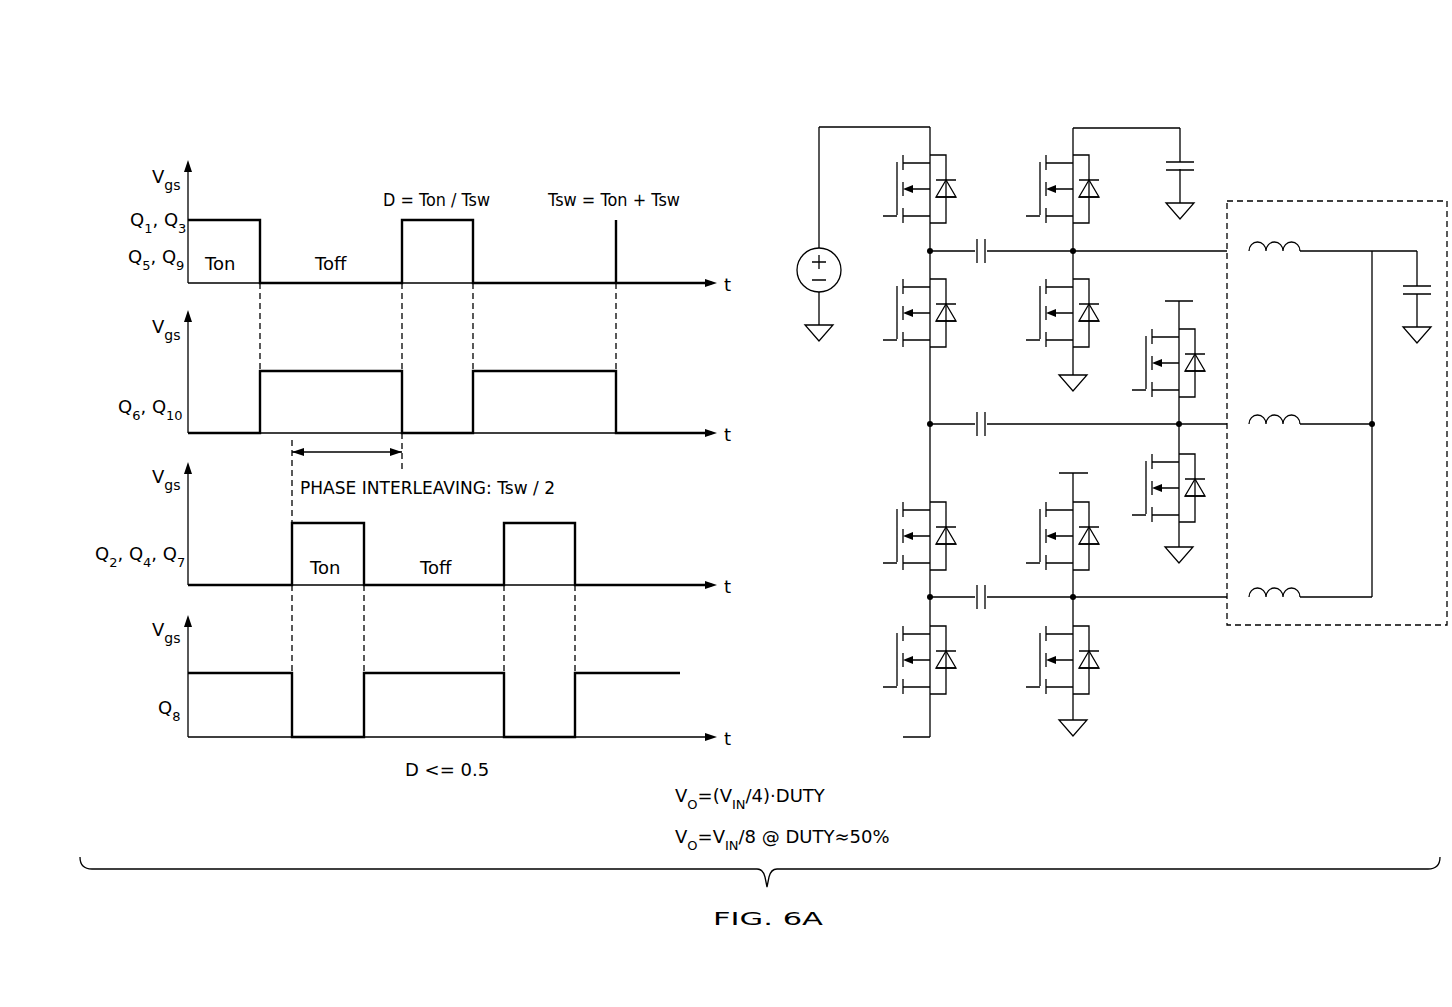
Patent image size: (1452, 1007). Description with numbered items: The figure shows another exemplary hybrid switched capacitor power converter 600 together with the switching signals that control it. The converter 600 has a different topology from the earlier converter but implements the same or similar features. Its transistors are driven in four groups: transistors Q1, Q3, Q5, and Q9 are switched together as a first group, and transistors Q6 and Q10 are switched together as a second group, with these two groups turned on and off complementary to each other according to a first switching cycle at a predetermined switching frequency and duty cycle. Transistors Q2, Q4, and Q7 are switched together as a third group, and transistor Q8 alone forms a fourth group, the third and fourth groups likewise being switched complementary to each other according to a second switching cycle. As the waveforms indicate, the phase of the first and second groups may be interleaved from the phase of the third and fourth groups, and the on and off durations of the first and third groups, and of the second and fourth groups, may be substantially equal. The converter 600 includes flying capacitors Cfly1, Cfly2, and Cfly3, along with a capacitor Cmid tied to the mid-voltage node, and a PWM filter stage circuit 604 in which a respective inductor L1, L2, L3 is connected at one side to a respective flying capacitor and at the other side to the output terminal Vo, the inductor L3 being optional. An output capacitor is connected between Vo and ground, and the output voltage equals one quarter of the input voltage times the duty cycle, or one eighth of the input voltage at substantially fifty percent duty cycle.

The hybrid switched capacitor power converter 600 is at (1369, 104).
The PWM filter stage circuit 604 is at (1338, 201).
The transistor Q1 is at (913, 189).
The transistor Q2 is at (913, 313).
The transistor Q3 is at (913, 536).
The transistor Q4 is at (913, 660).
The transistor Q5 is at (1056, 189).
The transistor Q6 is at (1056, 313).
The transistor Q7 is at (1162, 363).
The transistor Q8 is at (1162, 488).
The transistor Q9 is at (1056, 536).
The transistor Q10 is at (1051, 660).
The flying capacitor Cfly1 is at (988, 237).
The flying capacitor Cfly2 is at (985, 410).
The flying capacitor Cfly3 is at (985, 582).
The mid capacitor Cmid is at (1206, 169).
The inductor L1 is at (1274, 236).
The inductor L2 is at (1274, 409).
The inductor L3 is at (1274, 582).